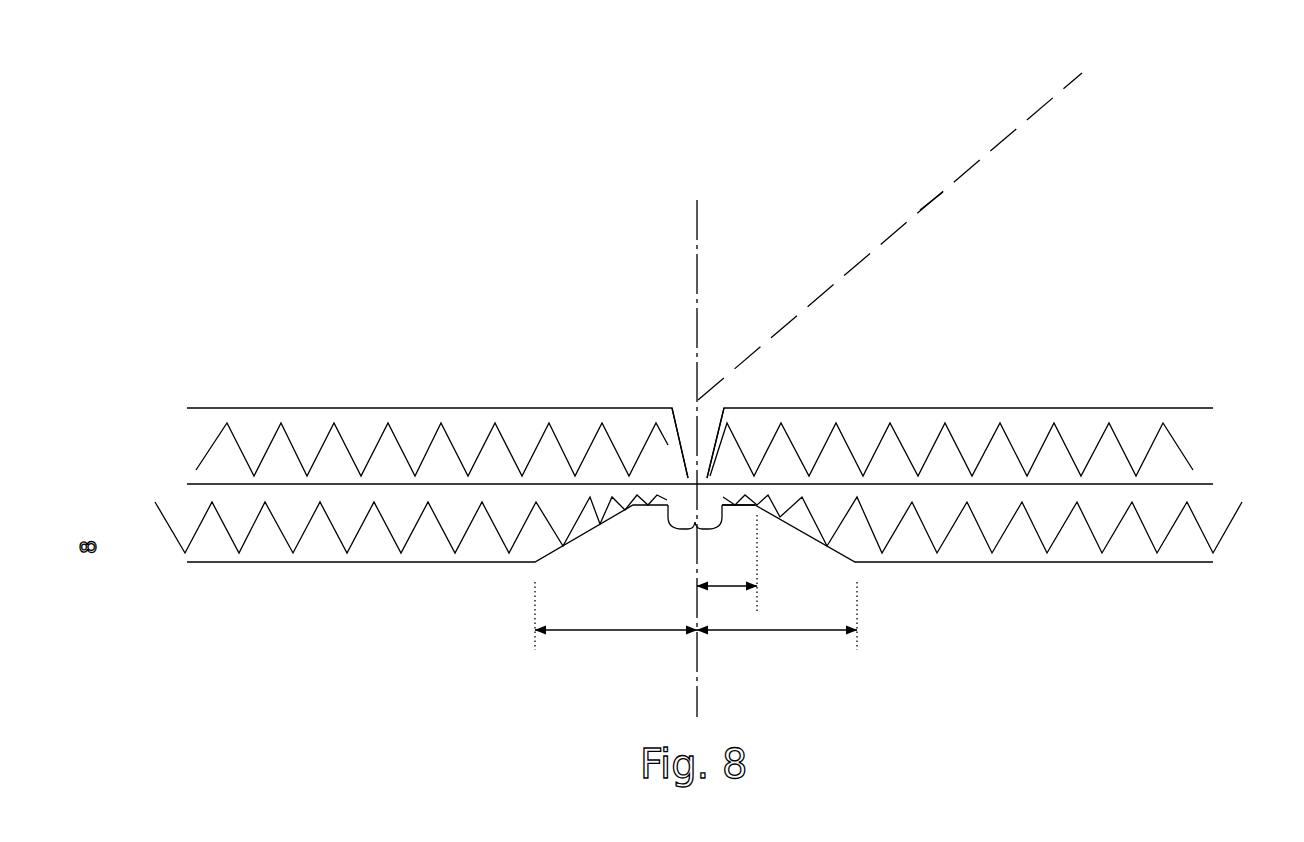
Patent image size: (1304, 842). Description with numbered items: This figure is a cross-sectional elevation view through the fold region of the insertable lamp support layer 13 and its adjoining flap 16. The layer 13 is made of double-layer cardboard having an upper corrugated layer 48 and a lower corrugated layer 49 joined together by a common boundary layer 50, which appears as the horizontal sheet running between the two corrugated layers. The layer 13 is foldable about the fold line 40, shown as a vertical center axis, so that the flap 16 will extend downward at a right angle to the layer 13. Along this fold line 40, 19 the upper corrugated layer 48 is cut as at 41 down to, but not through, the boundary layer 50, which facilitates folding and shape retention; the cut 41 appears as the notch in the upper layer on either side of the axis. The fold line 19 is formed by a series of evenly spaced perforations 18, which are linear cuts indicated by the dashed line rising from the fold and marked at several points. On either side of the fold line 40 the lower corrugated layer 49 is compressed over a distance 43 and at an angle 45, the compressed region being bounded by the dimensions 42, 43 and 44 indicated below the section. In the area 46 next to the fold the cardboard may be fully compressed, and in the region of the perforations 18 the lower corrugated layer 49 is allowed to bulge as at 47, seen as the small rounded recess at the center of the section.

The insertable lamp support layer 13 is at (455, 406).
The flap 16 is at (1040, 407).
The perforations 18 is at (1046, 112).
The fold line 19 is at (935, 197).
The fold line 40 is at (695, 296).
The cut 41 is at (690, 412).
The left recess width 42 is at (616, 621).
The distance 43 is at (777, 621).
The flat portion width 44 is at (727, 565).
The angle 45 is at (802, 540).
The area 46 is at (733, 512).
The bulge 47 is at (700, 535).
The upper corrugated layer 48 is at (190, 432).
The lower corrugated layer 49 is at (165, 542).
The boundary layer 50 is at (1218, 483).